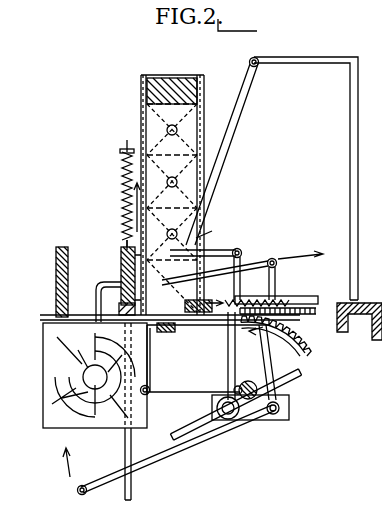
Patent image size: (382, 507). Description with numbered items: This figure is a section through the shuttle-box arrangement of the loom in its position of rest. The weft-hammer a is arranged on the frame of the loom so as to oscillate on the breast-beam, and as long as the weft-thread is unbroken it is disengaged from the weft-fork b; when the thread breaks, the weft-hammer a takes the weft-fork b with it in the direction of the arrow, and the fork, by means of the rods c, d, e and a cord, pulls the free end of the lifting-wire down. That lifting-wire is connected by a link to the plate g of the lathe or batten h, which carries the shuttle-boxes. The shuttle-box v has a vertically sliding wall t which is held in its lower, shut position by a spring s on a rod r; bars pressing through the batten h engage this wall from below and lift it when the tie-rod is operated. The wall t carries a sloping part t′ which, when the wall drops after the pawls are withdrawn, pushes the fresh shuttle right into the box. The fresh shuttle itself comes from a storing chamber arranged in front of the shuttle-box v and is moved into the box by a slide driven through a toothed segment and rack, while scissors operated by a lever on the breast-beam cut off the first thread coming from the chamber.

The hatched weight block s′ is at (177, 90).
The shuttle-box v is at (92, 280).
The vertically sliding wall t is at (121, 252).
The sloping part t′ is at (119, 302).
The weft-fork b is at (112, 280).
The rod r is at (129, 190).
The spring s is at (122, 200).
The rod c is at (258, 298).
The plate g is at (306, 318).
The lathe or batten h is at (78, 422).
The rod g′ is at (131, 487).
The weft-hammer a is at (228, 364).
The rod d is at (276, 404).
The rod e is at (210, 430).